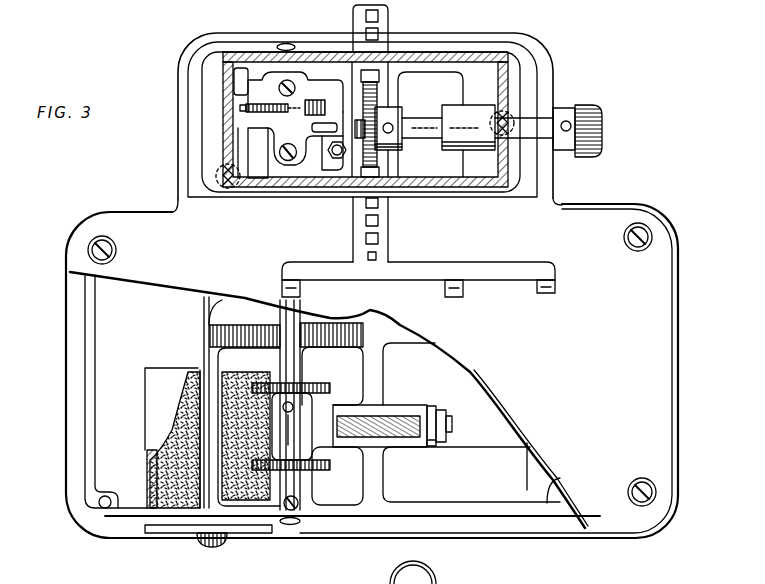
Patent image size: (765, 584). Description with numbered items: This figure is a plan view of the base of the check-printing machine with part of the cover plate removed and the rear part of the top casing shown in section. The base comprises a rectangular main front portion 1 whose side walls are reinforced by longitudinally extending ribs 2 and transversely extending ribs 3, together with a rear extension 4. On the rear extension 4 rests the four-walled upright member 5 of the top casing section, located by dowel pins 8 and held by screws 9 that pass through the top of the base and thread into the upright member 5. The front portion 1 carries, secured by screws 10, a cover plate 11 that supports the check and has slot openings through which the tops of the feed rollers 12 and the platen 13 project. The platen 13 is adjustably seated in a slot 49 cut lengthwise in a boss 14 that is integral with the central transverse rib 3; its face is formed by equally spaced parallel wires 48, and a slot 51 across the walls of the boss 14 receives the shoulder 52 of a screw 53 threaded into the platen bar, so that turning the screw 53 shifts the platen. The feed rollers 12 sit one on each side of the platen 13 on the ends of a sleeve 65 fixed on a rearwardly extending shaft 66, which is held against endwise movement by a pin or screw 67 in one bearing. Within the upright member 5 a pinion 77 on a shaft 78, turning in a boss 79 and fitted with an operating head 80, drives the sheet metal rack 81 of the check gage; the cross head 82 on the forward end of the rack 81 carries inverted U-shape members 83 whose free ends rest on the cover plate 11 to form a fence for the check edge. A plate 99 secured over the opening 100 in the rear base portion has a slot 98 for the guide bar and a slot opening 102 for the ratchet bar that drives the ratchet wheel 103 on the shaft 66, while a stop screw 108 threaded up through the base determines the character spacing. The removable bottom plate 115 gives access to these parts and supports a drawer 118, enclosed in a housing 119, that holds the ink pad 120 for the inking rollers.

The main front portion 1 is at (498, 527).
The longitudinally extending ribs 2 is at (414, 340).
The transversely extending ribs 3 is at (204, 305).
The rear extension 4 is at (538, 62).
The upright member 5 is at (458, 52).
The dowel pins 8 is at (226, 80).
The screws 9 is at (225, 184).
The screws 10 is at (117, 250).
The cover plate 11 is at (584, 398).
The feed rollers 12 is at (301, 388).
The platen 13 is at (395, 440).
The boss 14 is at (362, 410).
The wires 48 is at (392, 417).
The slot 49 is at (444, 410).
The slot 51 is at (433, 445).
The shoulder 52 is at (432, 406).
The screw 53 is at (449, 422).
The sleeve 65 is at (314, 442).
The shaft 66 is at (282, 318).
The pin or screw 67 is at (298, 512).
The pinion 77 is at (377, 100).
The shaft 78 is at (410, 137).
The boss 79 is at (468, 127).
The operating head 80 is at (602, 123).
The rack 81 is at (389, 227).
The cross head 82 is at (452, 265).
The inverted U-shape members 83 is at (537, 290).
The slot 98 is at (322, 133).
The plate 99 is at (308, 128).
The opening 100 is at (333, 108).
The slot opening 102 is at (238, 108).
The ratchet wheel 103 is at (314, 106).
The stop screw 108 is at (336, 160).
The bottom plate 115 is at (133, 337).
The drawer 118 is at (247, 376).
The housing 119 is at (157, 410).
The ink pad 120 is at (160, 472).